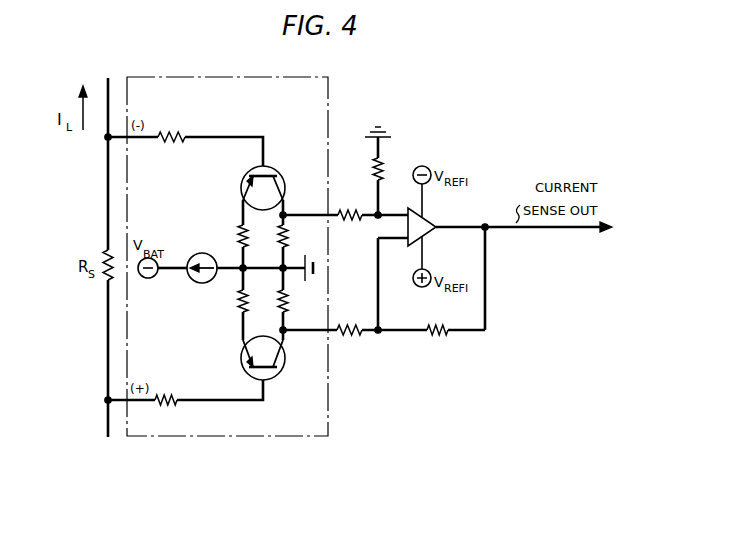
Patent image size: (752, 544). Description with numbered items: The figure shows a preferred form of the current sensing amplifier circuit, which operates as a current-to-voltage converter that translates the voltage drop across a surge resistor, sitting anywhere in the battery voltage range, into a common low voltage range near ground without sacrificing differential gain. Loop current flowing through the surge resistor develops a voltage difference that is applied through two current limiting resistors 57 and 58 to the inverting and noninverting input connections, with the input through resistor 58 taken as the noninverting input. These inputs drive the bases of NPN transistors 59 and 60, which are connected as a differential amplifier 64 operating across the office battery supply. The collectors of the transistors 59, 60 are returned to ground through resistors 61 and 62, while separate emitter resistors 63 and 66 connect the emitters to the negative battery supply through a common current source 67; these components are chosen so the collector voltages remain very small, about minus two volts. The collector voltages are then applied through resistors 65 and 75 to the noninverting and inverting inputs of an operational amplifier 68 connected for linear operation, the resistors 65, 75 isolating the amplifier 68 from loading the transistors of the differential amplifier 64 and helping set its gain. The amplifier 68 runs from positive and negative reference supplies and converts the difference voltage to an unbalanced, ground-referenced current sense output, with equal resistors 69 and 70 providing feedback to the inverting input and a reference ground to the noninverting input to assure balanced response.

The current limiting resistor 57 is at (171, 128).
The current limiting resistor 58 is at (166, 391).
The NPN transistor 59 is at (272, 184).
The NPN transistor 60 is at (272, 362).
The collector resistor 61 is at (295, 236).
The collector resistor 62 is at (295, 301).
The emitter resistor 63 is at (233, 236).
The differential amplifier 64 is at (304, 77).
The isolation resistor 65 is at (350, 226).
The emitter resistor 66 is at (233, 301).
The current source 67 is at (200, 272).
The operational amplifier 68 is at (429, 232).
The feedback resistor 69 is at (438, 321).
The reference ground resistor 70 is at (365, 169).
The isolation resistor 75 is at (349, 321).